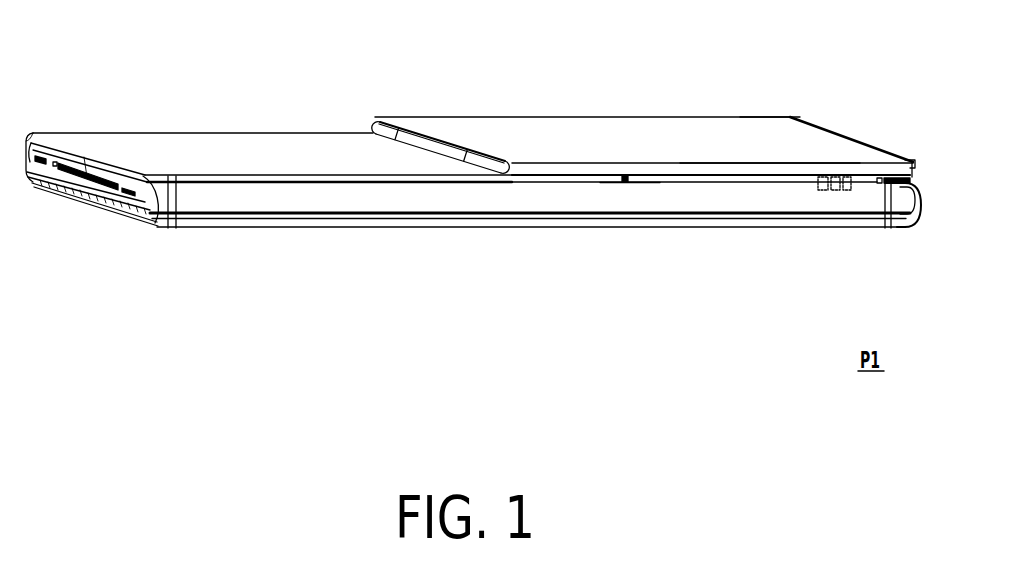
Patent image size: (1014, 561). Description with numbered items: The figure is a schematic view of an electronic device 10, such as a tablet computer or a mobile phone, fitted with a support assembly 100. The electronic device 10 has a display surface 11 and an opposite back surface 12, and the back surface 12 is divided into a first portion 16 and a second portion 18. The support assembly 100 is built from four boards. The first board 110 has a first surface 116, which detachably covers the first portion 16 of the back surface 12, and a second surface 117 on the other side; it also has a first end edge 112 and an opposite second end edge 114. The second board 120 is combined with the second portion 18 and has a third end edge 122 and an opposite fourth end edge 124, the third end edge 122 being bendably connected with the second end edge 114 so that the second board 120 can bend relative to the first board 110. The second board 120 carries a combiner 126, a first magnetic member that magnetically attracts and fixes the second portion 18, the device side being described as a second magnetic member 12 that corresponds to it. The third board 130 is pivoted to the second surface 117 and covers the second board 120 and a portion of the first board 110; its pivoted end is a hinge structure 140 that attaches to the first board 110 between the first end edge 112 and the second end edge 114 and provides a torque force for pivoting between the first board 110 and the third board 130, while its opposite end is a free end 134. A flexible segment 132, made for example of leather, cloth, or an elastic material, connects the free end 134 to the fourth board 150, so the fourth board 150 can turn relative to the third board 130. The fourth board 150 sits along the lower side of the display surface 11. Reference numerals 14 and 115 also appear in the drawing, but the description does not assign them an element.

The support assembly 100 is at (858, 75).
The electronic device 10 is at (160, 199).
The display surface 11 is at (363, 214).
The back surface 12 is at (848, 184).
The flexible display 14 is at (530, 105).
The first portion 16 is at (232, 182).
The second portion 18 is at (787, 178).
The first board 110 is at (199, 198).
The first end edge 112 is at (38, 132).
The second end edge 114 is at (618, 177).
The connecting portion 115 is at (628, 186).
The first surface 116 is at (200, 187).
The second surface 117 is at (107, 139).
The second board 120 is at (685, 178).
The third end edge 122 is at (633, 178).
The fourth end edge 124 is at (911, 162).
The combiner 126 is at (835, 177).
The third board 130 is at (770, 125).
The flexible segment 132 is at (926, 197).
The free end 134 is at (912, 172).
The hinge structure 140 is at (376, 125).
The fourth board 150 is at (813, 228).